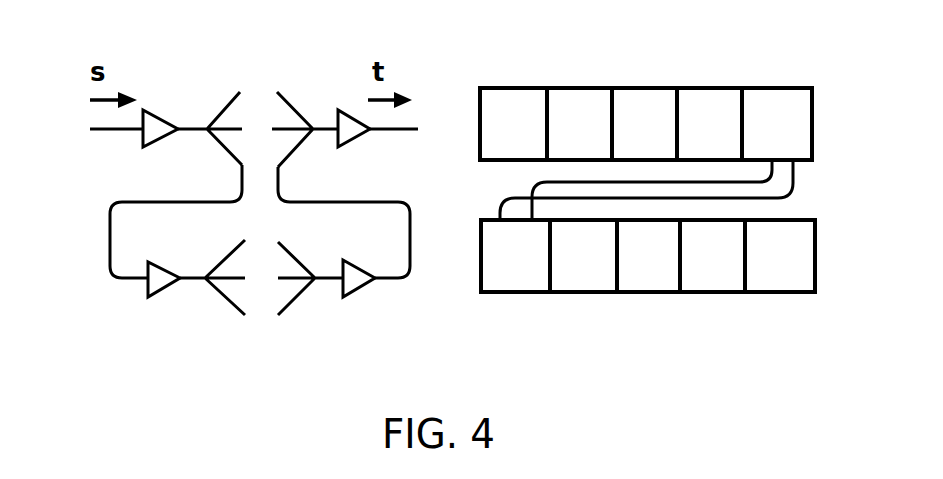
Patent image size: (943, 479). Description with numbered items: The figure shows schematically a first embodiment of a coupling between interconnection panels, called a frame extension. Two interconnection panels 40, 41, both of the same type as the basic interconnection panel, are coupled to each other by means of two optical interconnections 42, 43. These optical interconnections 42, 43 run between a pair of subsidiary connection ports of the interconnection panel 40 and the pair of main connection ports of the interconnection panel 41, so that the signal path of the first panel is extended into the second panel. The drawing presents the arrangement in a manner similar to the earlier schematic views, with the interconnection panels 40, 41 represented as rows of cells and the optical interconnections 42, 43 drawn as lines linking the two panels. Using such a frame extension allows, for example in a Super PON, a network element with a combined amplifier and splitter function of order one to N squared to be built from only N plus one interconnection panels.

The interconnection panel 40 is at (634, 81).
The interconnection panel 41 is at (635, 300).
The optical interconnection 42 is at (332, 198).
The optical interconnection 43 is at (143, 198).